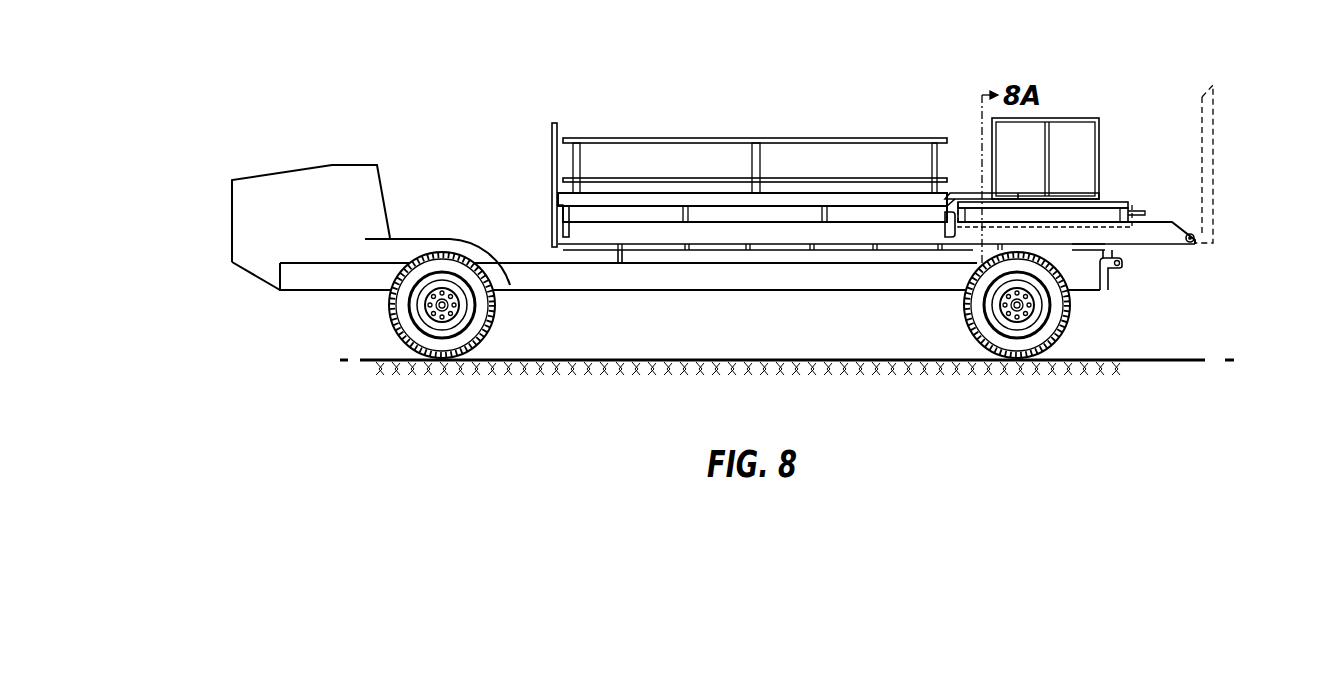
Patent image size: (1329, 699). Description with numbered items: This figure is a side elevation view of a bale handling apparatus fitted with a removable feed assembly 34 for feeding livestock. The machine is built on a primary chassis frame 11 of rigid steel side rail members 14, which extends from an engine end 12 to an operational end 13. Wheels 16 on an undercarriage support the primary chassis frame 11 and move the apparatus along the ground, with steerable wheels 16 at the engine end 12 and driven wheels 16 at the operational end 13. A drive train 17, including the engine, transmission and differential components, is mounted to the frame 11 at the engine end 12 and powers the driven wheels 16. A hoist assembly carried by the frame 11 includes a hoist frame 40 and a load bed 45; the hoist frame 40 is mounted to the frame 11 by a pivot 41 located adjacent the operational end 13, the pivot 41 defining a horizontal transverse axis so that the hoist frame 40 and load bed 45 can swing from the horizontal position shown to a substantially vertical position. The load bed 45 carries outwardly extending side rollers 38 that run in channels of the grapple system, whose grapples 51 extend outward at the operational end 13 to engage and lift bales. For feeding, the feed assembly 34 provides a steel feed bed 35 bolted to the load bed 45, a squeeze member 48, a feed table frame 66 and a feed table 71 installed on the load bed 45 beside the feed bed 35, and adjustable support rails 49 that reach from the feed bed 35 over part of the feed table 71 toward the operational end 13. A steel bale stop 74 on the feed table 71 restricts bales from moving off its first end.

The primary chassis frame 11 is at (328, 280).
The engine end 12 is at (192, 240).
The operational end 13 is at (1236, 235).
The side rail members 14 is at (660, 272).
The wheels 16 is at (433, 330).
The drive train 17 is at (320, 173).
The feed assembly 34 is at (1187, 63).
The feed bed 35 is at (634, 206).
The side rollers 38 is at (1193, 244).
The hoist frame 40 is at (783, 260).
The pivot 41 is at (1121, 265).
The load bed 45 is at (862, 237).
The squeeze member 48 is at (812, 138).
The adjustable support rails 49 is at (1005, 194).
The grapples 51 is at (1214, 162).
The feed table frame 66 is at (1083, 213).
The feed table 71 is at (1113, 200).
The bale stop 74 is at (1070, 120).